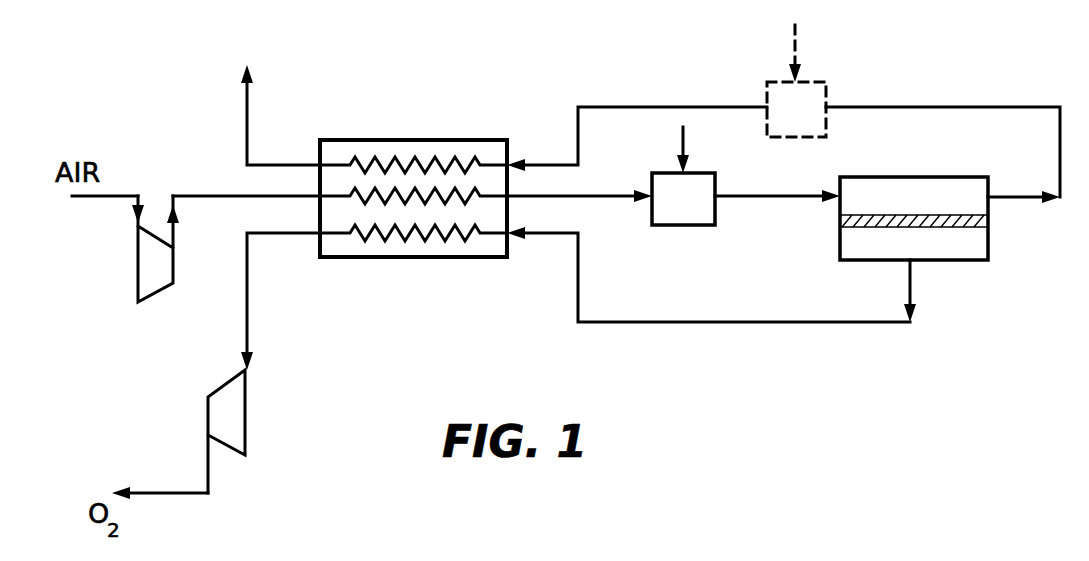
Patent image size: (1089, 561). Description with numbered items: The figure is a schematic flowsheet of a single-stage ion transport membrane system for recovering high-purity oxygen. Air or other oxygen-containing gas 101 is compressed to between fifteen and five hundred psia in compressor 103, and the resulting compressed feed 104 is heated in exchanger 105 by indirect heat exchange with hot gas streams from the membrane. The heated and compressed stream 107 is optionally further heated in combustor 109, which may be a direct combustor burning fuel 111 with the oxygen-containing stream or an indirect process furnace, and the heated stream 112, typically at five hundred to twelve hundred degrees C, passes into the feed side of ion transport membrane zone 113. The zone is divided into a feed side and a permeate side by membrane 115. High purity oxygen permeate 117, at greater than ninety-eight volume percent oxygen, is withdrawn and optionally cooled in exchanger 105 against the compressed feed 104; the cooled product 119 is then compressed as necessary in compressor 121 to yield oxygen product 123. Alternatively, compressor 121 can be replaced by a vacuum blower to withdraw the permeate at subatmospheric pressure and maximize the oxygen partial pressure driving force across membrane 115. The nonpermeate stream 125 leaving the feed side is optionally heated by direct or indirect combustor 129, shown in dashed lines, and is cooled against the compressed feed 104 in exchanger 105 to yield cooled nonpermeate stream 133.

The air or other oxygen-containing gas 101 is at (108, 200).
The compressor 103 is at (158, 295).
The compressed feed 104 is at (208, 192).
The exchanger 105 is at (413, 138).
The heated and compressed stream 107 is at (608, 200).
The combustor 109 is at (682, 225).
The fuel 111 is at (680, 152).
The heated stream 112 is at (753, 202).
The ion transport membrane zone 113 is at (917, 177).
The membrane 115 is at (935, 225).
The high purity oxygen permeate 117 is at (785, 325).
The cooled product 119 is at (247, 307).
The compressor 121 is at (247, 422).
The oxygen product 123 is at (208, 473).
The nonpermeate stream 125 is at (887, 108).
The direct or indirect combustor 129 is at (768, 80).
The cooled nonpermeate stream 133 is at (247, 118).